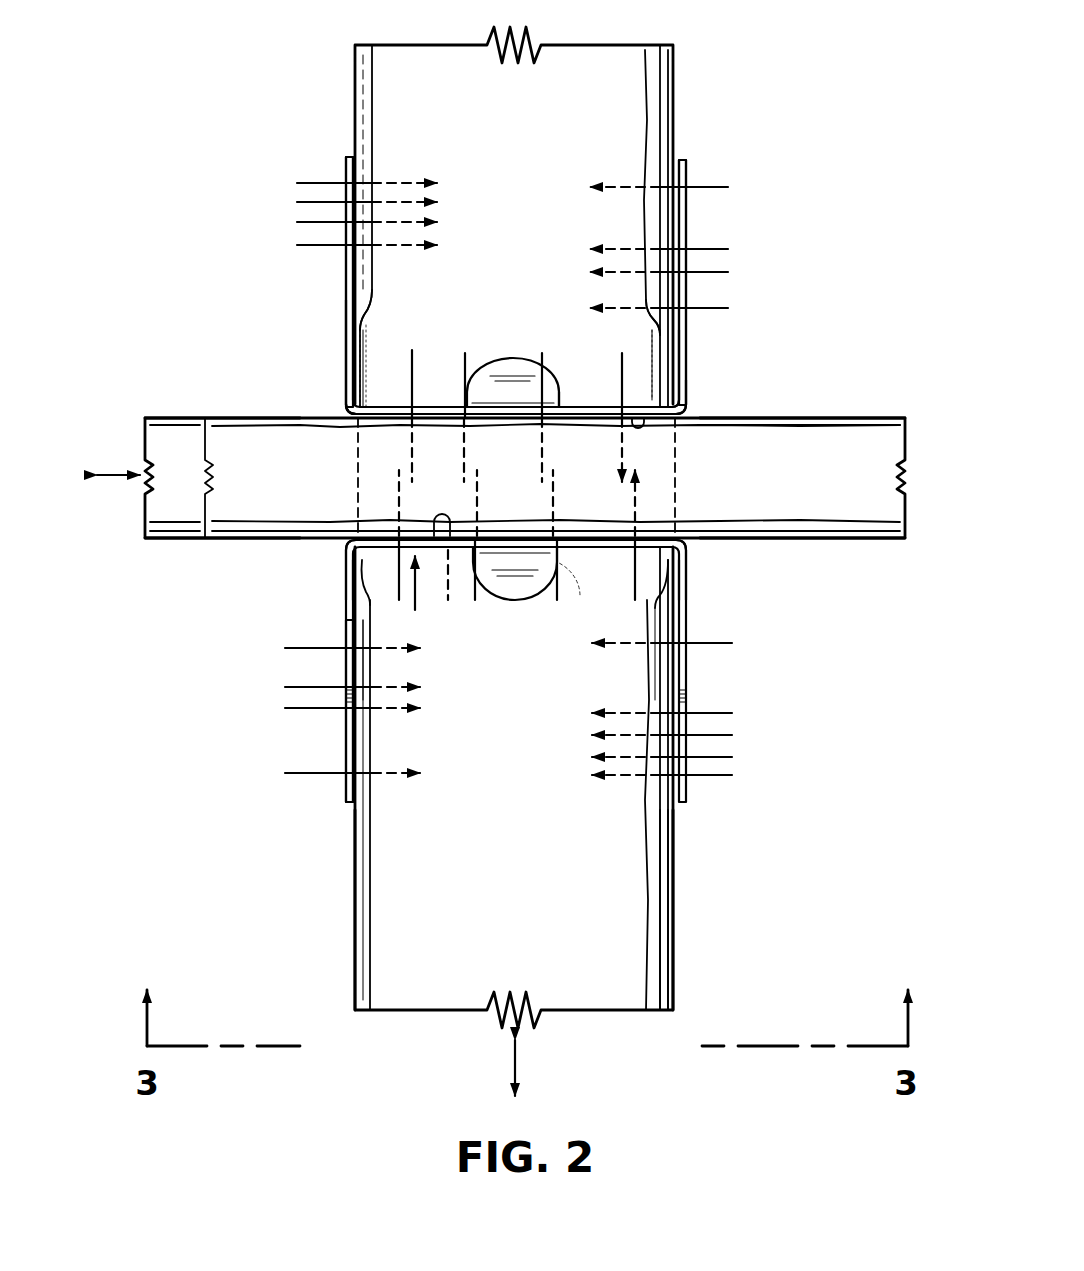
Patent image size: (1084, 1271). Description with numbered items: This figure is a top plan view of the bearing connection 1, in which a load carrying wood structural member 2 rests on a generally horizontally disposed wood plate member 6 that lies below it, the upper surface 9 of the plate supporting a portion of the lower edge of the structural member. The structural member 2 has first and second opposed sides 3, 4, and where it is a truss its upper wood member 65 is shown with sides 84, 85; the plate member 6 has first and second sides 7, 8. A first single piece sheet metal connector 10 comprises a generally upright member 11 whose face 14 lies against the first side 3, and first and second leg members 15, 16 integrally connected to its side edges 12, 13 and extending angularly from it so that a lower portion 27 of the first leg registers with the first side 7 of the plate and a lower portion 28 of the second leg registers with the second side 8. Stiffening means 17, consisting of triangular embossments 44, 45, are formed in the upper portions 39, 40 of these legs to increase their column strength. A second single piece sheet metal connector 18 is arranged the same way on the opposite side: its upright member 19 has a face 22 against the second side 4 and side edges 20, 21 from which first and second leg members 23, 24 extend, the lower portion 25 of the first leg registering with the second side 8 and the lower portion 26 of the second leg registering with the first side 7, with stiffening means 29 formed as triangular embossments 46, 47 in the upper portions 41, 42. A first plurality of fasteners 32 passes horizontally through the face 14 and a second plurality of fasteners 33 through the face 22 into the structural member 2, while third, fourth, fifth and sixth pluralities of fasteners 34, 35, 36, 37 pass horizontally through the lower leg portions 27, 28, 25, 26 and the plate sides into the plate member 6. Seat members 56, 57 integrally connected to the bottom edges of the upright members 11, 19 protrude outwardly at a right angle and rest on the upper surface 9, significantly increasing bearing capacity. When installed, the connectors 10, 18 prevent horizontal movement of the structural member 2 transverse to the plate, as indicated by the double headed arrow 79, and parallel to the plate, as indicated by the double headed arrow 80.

The bearing connection 1 is at (750, 258).
The load carrying wood structural member 2 is at (165, 412).
The first side 3 is at (172, 540).
The second side 4 is at (175, 418).
The wood plate member 6 is at (680, 867).
The first side 7 is at (356, 942).
The second side 8 is at (677, 945).
The upper surface 9 is at (506, 890).
The first single piece sheet metal connector 10 is at (346, 778).
The generally upright member 11 is at (517, 588).
The side edge 12 is at (352, 541).
The side edge 13 is at (686, 542).
The face 14 is at (450, 571).
The first leg member 15 is at (346, 720).
The second leg member 16 is at (690, 725).
The stiffening means 17 is at (365, 583).
The second single piece sheet metal connector 18 is at (347, 258).
The generally upright member 19 is at (424, 408).
The side edge 20 is at (683, 412).
The side edge 21 is at (350, 414).
The face 22 is at (640, 418).
The first leg member 23 is at (688, 287).
The second leg member 24 is at (347, 233).
The lower portion 25 is at (686, 200).
The lower portion 26 is at (347, 191).
The lower portion 27 is at (346, 757).
The lower portion 28 is at (688, 745).
The stiffening means 29 is at (375, 328).
The first plurality of fasteners 32 is at (560, 590).
The second plurality of fasteners 33 is at (542, 392).
The third plurality of fasteners 34 is at (340, 688).
The fourth plurality of fasteners 35 is at (722, 646).
The fifth plurality of fasteners 36 is at (626, 248).
The sixth plurality of fasteners 37 is at (347, 222).
The upper portion 39 is at (352, 566).
The upper portion 40 is at (688, 565).
The upper portion 41 is at (686, 380).
The upper portion 42 is at (347, 395).
The triangular embossment 44 is at (365, 628).
The triangular embossment 45 is at (663, 612).
The triangular embossment 46 is at (662, 330).
The triangular embossment 47 is at (370, 350).
The seat member 56 is at (512, 598).
The seat member 57 is at (482, 372).
The upper wood member 65 is at (790, 432).
The double headed arrow 79 is at (115, 473).
The vertical movement arrow 80 is at (522, 1062).
The side 84 is at (860, 540).
The side 85 is at (834, 418).